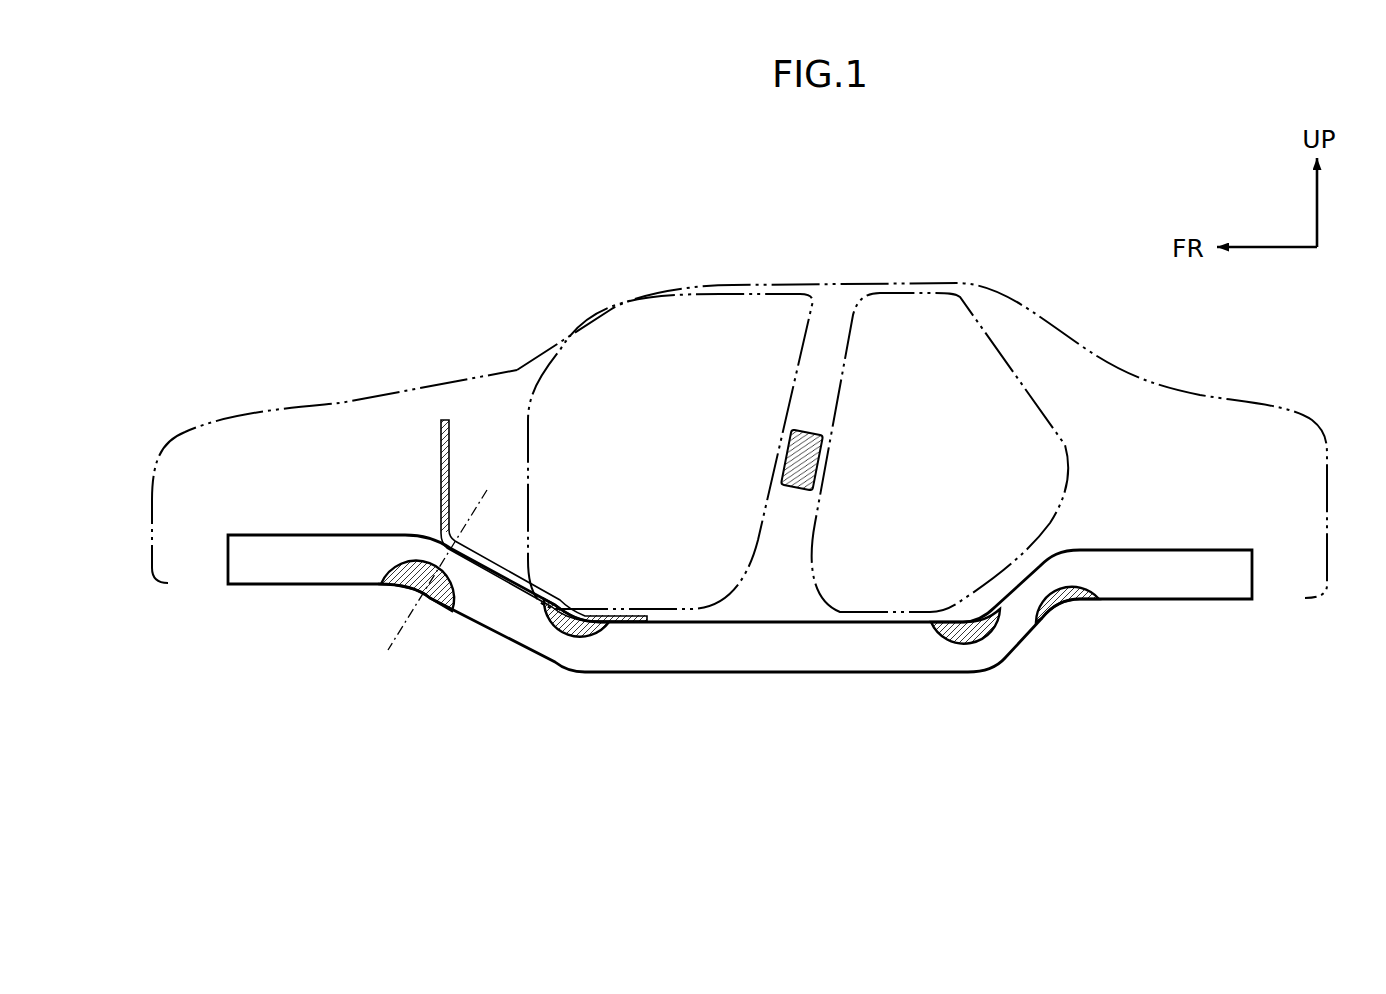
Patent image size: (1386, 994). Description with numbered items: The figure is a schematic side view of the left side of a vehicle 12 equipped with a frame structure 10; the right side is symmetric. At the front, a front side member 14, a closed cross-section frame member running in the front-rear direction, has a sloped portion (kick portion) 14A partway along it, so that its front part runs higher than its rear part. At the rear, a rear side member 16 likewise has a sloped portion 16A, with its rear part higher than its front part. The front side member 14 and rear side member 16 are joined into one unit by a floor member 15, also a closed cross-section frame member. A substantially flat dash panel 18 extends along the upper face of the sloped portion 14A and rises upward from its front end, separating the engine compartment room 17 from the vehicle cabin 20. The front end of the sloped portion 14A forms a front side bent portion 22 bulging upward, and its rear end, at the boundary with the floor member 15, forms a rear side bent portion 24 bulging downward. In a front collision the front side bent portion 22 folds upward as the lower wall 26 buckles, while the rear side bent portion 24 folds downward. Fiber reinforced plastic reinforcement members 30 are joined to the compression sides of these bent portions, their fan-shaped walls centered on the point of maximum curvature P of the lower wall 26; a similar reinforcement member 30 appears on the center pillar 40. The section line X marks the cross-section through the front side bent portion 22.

The frame structure 10 is at (740, 558).
The vehicle 12 is at (739, 389).
The front side member 14 is at (250, 533).
The sloped portion (kick portion) 14A is at (492, 612).
The floor member 15 is at (797, 675).
The rear side member 16 is at (1200, 548).
The sloped portion (kick portion) 16A is at (1017, 622).
The engine compartment room 17 is at (284, 463).
The dash panel 18 is at (449, 440).
The vehicle cabin 20 is at (663, 405).
The front side bent portion 22 is at (427, 548).
The rear side bent portion 24 is at (556, 657).
The lower wall 26 is at (430, 598).
The reinforcement member 30 is at (713, 543).
The center pillar 40 is at (848, 353).
The point of maximum curvature P is at (432, 587).
The section line X- X is at (457, 480).